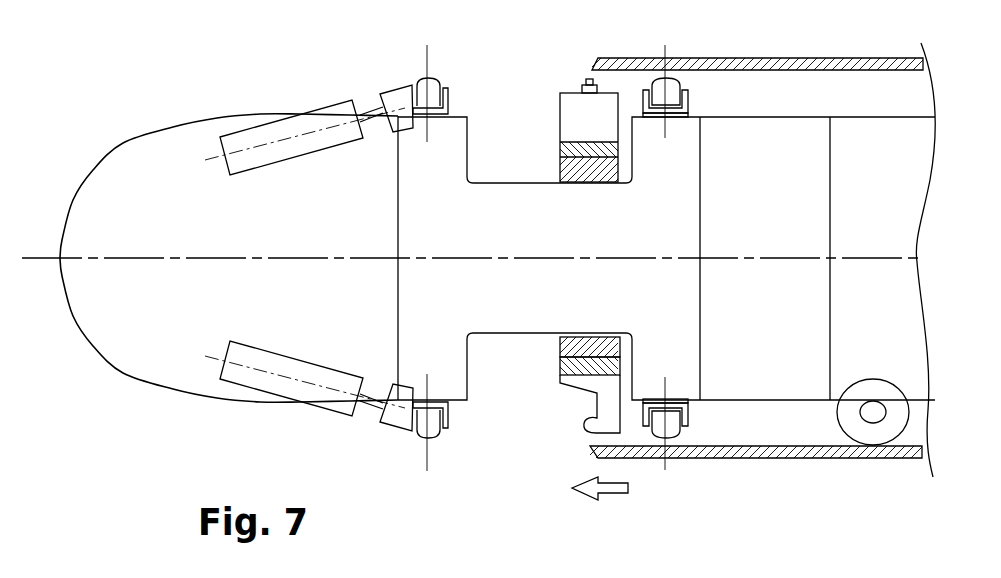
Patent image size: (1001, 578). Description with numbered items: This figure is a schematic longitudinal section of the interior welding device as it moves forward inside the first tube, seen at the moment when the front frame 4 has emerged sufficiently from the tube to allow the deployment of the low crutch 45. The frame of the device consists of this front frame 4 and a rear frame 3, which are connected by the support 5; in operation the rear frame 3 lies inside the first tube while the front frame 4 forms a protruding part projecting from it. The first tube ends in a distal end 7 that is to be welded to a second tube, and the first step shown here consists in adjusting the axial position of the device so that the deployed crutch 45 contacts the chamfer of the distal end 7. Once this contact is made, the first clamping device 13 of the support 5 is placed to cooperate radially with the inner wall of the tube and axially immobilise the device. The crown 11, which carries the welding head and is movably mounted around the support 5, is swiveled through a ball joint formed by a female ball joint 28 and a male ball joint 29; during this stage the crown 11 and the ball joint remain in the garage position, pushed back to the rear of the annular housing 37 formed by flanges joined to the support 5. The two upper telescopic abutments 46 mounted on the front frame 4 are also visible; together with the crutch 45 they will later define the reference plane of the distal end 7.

The rear frame 3 is at (772, 380).
The front frame 4 is at (150, 323).
The support 5 is at (528, 297).
The distal end 7 is at (592, 68).
The crown 11 is at (607, 108).
The first clamping device 13 is at (672, 435).
The female ball joint 28 is at (615, 147).
The male ball joint 29 is at (600, 168).
The annular housing 37 is at (507, 150).
The low crutch 45 is at (397, 427).
The upper telescopic abutments 46 is at (400, 98).